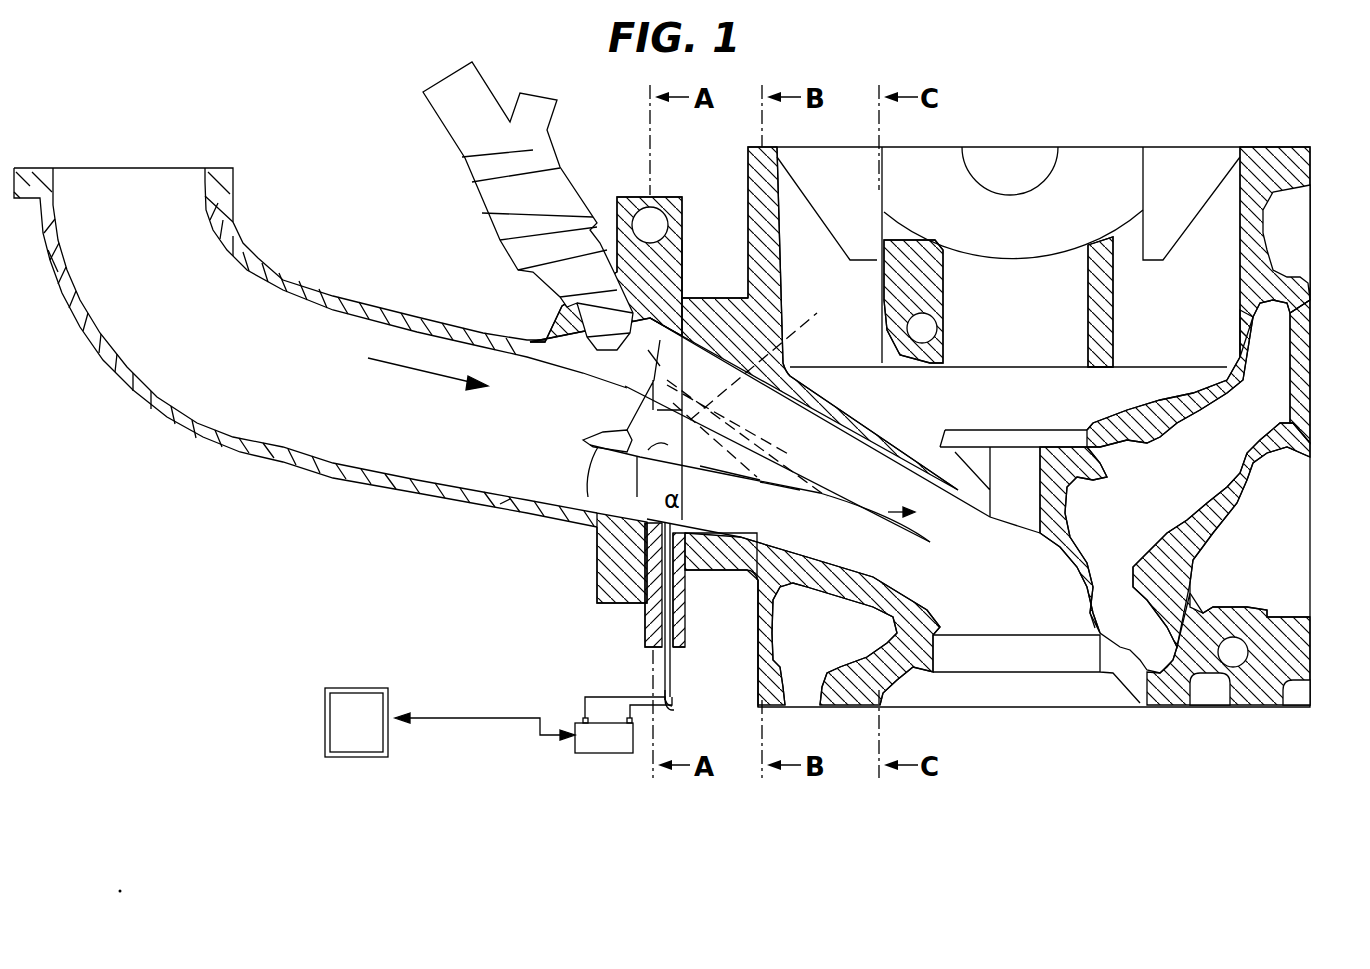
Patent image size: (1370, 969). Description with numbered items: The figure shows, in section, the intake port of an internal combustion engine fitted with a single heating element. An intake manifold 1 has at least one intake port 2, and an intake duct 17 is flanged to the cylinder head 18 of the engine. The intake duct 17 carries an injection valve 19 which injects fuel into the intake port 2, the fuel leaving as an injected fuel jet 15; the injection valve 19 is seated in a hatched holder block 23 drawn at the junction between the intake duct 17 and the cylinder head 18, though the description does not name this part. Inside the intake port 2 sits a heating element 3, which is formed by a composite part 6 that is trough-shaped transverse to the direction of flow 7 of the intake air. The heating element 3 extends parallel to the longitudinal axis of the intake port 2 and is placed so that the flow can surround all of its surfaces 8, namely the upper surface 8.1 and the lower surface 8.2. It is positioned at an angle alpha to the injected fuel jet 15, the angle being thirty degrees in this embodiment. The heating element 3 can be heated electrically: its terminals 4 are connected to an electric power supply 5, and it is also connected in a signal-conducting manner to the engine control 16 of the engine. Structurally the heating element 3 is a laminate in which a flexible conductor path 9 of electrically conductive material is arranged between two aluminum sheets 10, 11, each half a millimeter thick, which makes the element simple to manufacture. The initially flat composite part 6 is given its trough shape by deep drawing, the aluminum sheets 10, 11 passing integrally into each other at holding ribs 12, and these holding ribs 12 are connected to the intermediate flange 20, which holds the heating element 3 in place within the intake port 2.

The intake manifold 1 is at (265, 450).
The intake port 2 is at (545, 468).
The heating element 3 is at (733, 470).
The terminals 4 is at (678, 673).
The electric power supply 5 is at (575, 740).
The composite part 6 is at (597, 525).
The direction of flow 7 is at (430, 372).
The surfaces 8 is at (915, 513).
The upper surface 8.1 is at (832, 499).
The lower surface 8.2 is at (852, 506).
The flexible conductor path 9 is at (781, 480).
The aluminum sheet 10 is at (603, 440).
The aluminum sheet 11 is at (648, 448).
The holding ribs 12 is at (670, 347).
The injected fuel jet 15 is at (756, 402).
The engine control 16 is at (375, 714).
The intake duct 17 is at (60, 292).
The cylinder head 18 is at (1305, 167).
The injection valve 19 is at (480, 203).
The intermediate flange 20 is at (682, 290).
The injector holder 23 is at (641, 220).